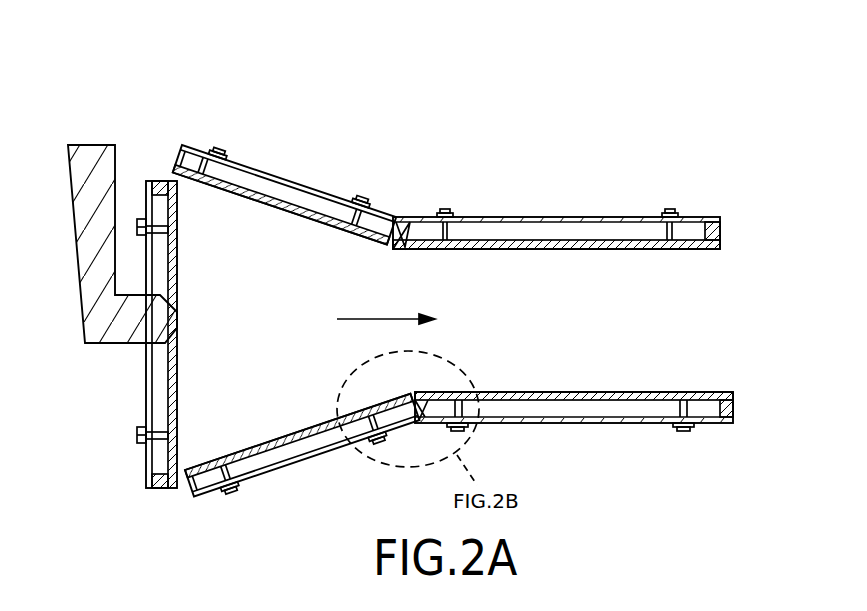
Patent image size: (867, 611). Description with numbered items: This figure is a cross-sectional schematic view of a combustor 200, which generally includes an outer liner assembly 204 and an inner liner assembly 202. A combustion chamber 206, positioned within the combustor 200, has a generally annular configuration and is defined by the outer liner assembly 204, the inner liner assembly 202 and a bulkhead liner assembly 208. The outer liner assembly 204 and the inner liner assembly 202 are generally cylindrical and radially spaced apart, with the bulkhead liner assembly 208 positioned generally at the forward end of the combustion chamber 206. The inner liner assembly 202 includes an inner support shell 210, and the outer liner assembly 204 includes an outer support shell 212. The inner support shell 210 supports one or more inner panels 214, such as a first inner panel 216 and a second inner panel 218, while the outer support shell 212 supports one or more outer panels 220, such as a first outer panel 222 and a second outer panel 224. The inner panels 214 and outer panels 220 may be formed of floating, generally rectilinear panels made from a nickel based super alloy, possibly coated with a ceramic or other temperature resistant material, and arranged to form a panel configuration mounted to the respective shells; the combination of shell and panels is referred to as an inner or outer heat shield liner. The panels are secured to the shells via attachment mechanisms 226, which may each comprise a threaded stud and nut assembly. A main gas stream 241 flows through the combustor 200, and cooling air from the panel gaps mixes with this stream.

The combustor 200 is at (172, 100).
The inner liner assembly 202 is at (459, 429).
The outer liner assembly 204 is at (457, 208).
The combustion chamber 206 is at (548, 323).
The bulkhead liner assembly 208 is at (190, 273).
The inner support shell 210 is at (292, 465).
The outer support shell 212 is at (257, 170).
The inner panels 214 is at (596, 392).
The first inner panel 216 is at (262, 441).
The second inner panel 218 is at (668, 392).
The outer panels 220 is at (592, 250).
The first outer panel 222 is at (238, 195).
The second outer panel 224 is at (688, 250).
The attachment mechanisms 226 is at (440, 210).
The main gas stream 241 is at (367, 319).